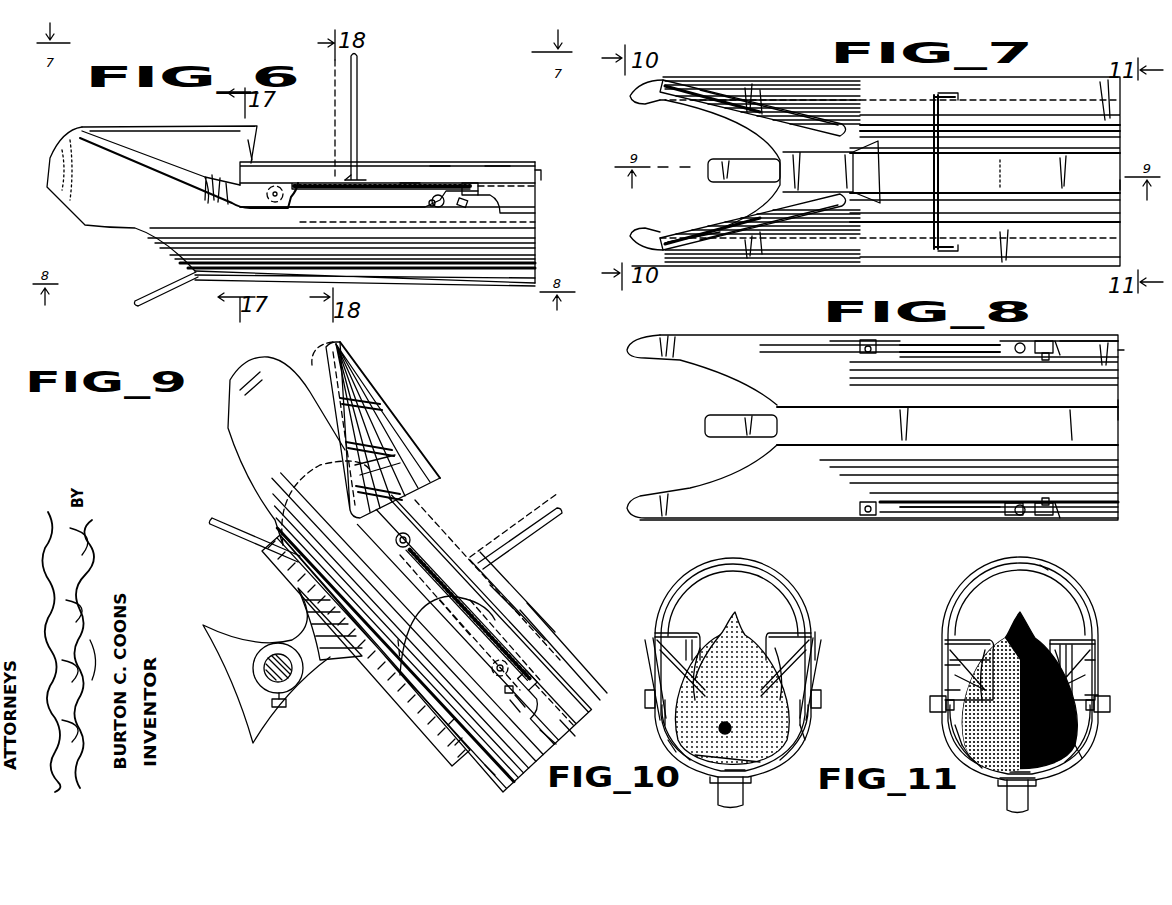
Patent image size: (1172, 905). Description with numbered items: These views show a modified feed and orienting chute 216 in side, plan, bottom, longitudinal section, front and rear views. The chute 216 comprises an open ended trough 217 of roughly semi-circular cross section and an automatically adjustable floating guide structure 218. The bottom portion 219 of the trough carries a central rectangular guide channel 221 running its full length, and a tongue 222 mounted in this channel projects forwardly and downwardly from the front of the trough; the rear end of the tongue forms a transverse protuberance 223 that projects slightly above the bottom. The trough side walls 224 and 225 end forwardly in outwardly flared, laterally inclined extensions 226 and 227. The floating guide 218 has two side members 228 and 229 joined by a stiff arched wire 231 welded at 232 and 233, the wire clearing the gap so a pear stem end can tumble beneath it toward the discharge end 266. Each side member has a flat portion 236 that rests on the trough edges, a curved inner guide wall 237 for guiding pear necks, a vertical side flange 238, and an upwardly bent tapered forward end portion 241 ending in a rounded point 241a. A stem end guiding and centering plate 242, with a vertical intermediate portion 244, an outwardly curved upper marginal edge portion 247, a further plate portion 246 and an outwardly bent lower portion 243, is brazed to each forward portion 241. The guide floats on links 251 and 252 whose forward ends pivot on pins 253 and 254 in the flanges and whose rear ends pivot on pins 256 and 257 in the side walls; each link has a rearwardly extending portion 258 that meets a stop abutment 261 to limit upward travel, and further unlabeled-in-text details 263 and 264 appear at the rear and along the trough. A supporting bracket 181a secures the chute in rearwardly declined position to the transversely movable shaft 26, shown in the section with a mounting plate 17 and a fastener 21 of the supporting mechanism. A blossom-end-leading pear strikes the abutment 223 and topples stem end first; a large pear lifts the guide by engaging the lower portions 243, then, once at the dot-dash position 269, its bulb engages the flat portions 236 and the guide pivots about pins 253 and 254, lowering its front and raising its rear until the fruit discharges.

In FIG. 9, the mounting plate 17 is at (262, 707).
In FIG. 9, the nut 21 is at (288, 699).
In FIG. 9, the transversely movable shaft 26 is at (300, 677).
In FIG. 9, the supporting bracket 181a is at (322, 622).
In FIG. 6, the chute 216 is at (262, 278).
In FIG. 7, the chute 216 is at (1100, 88).
In FIG. 8, the chute 216 is at (775, 345).
In FIG. 9, the chute 216 is at (440, 695).
In FIG. 10, the chute 216 is at (778, 768).
In FIG. 11, the chute 216 is at (1070, 776).
In FIG. 6, the trough 217 is at (387, 222).
In FIG. 7, the trough 217 is at (1112, 153).
In FIG. 8, the trough 217 is at (1108, 394).
In FIG. 9, the trough 217 is at (484, 645).
In FIG. 10, the trough 217 is at (800, 760).
In FIG. 11, the trough 217 is at (1080, 770).
In FIG. 6, the floating guide structure 218 is at (285, 158).
In FIG. 7, the floating guide structure 218 is at (1078, 262).
In FIG. 8, the floating guide structure 218 is at (845, 344).
In FIG. 9, the floating guide structure 218 is at (448, 469).
In FIG. 10, the floating guide structure 218 is at (648, 640).
In FIG. 11, the floating guide structure 218 is at (940, 658).
In FIG. 6, the bottom portion 219 is at (428, 268).
In FIG. 7, the bottom portion 219 is at (984, 184).
In FIG. 8, the bottom portion 219 is at (984, 389).
In FIG. 9, the bottom portion 219 is at (442, 718).
In FIG. 10, the bottom portion 219 is at (668, 745).
In FIG. 11, the bottom portion 219 is at (972, 760).
In FIG. 6, the guide channel 221 is at (500, 284).
In FIG. 7, the guide channel 221 is at (1039, 172).
In FIG. 8, the guide channel 221 is at (947, 426).
In FIG. 9, the guide channel 221 is at (478, 762).
In FIG. 10, the guide channel 221 is at (716, 787).
In FIG. 11, the guide channel 221 is at (1037, 790).
In FIG. 6, the tongue 222 is at (160, 291).
In FIG. 7, the tongue 222 is at (745, 165).
In FIG. 8, the tongue 222 is at (736, 420).
In FIG. 9, the tongue 222 is at (238, 530).
In FIG. 10, the tongue 222 is at (745, 795).
In FIG. 11, the tongue 222 is at (1012, 797).
In FIG. 7, the protuberance 223 is at (880, 162).
In FIG. 9, the protuberance 223 is at (356, 612).
In FIG. 10, the protuberance 223 is at (692, 760).
In FIG. 11, the protuberance 223 is at (1040, 782).
In FIG. 8, the side wall 224 is at (1108, 466).
In FIG. 9, the side wall 224 is at (447, 635).
In FIG. 10, the side wall 224 is at (664, 714).
In FIG. 11, the side wall 224 is at (1085, 755).
In FIG. 6, the side wall 225 is at (525, 226).
In FIG. 8, the side wall 225 is at (1112, 372).
In FIG. 10, the side wall 225 is at (800, 736).
In FIG. 11, the side wall 225 is at (960, 737).
In FIG. 6, the extension 226 is at (165, 199).
In FIG. 7, the extension 226 is at (700, 234).
In FIG. 8, the extension 226 is at (702, 370).
In FIG. 10, the extension 226 is at (812, 678).
In FIG. 7, the extension 227 is at (682, 100).
In FIG. 8, the extension 227 is at (872, 481).
In FIG. 9, the extension 227 is at (299, 443).
In FIG. 10, the extension 227 is at (652, 668).
In FIG. 7, the side member 228 is at (990, 111).
In FIG. 8, the side member 228 is at (960, 515).
In FIG. 9, the side member 228 is at (500, 592).
In FIG. 10, the side member 228 is at (665, 652).
In FIG. 11, the side member 228 is at (1100, 667).
In FIG. 6, the side member 229 is at (440, 175).
In FIG. 7, the side member 229 is at (990, 253).
In FIG. 8, the side member 229 is at (1080, 345).
In FIG. 10, the side member 229 is at (820, 644).
In FIG. 11, the side member 229 is at (945, 668).
In FIG. 6, the arched wire 231 is at (360, 108).
In FIG. 7, the arched wire 231 is at (940, 162).
In FIG. 9, the arched wire 231 is at (540, 530).
In FIG. 10, the arched wire 231 is at (792, 585).
In FIG. 11, the arched wire 231 is at (1082, 597).
In FIG. 7, the weld 232 is at (950, 97).
In FIG. 11, the weld 232 is at (1098, 700).
In FIG. 6, the weld 233 is at (368, 180).
In FIG. 7, the weld 233 is at (945, 252).
In FIG. 11, the weld 233 is at (945, 693).
In FIG. 6, the flat portion 236 is at (410, 182).
In FIG. 8, the flat portion 236 is at (996, 348).
In FIG. 9, the flat portion 236 is at (540, 628).
In FIG. 11, the flat portion 236 is at (952, 677).
In FIG. 6, the curved inner guide wall 237 is at (497, 175).
In FIG. 7, the curved inner guide wall 237 is at (1110, 136).
In FIG. 9, the curved inner guide wall 237 is at (512, 612).
In FIG. 11, the curved inner guide wall 237 is at (940, 652).
In FIG. 6, the side flange 238 is at (520, 200).
In FIG. 7, the side flange 238 is at (924, 76).
In FIG. 8, the side flange 238 is at (1058, 346).
In FIG. 9, the side flange 238 is at (440, 496).
In FIG. 10, the side flange 238 is at (650, 700).
In FIG. 11, the side flange 238 is at (940, 705).
In FIG. 6, the tapered forward end portion 241 is at (125, 176).
In FIG. 7, the tapered forward end portion 241 is at (790, 92).
In FIG. 11, the tapered forward end portion 241 is at (940, 645).
In FIG. 7, the rounded point 241a is at (648, 90).
In FIG. 6, the stem end guiding and centering plate 242 is at (212, 142).
In FIG. 7, the stem end guiding and centering plate 242 is at (752, 112).
In FIG. 9, the stem end guiding and centering plate 242 is at (400, 415).
In FIG. 10, the stem end guiding and centering plate 242 is at (682, 595).
In FIG. 11, the stem end guiding and centering plate 242 is at (945, 630).
In FIG. 9, the lower portion 243 is at (362, 479).
In FIG. 10, the lower portion 243 is at (806, 726).
In FIG. 11, the lower portion 243 is at (952, 726).
In FIG. 6, the vertical intermediate portion 244 is at (269, 158).
In FIG. 7, the vertical intermediate portion 244 is at (785, 108).
In FIG. 9, the vertical intermediate portion 244 is at (424, 456).
In FIG. 10, the vertical intermediate portion 244 is at (730, 648).
In FIG. 11, the vertical intermediate portion 244 is at (1040, 645).
In FIG. 7, the lid rib 246 is at (690, 240).
In FIG. 9, the lid rib 246 is at (385, 398).
In FIG. 10, the lid rib 246 is at (665, 622).
In FIG. 9, the upper marginal edge portion 247 is at (418, 432).
In FIG. 10, the upper marginal edge portion 247 is at (700, 650).
In FIG. 11, the upper marginal edge portion 247 is at (985, 648).
In FIG. 8, the link 251 is at (980, 515).
In FIG. 6, the link 252 is at (387, 195).
In FIG. 8, the link 252 is at (955, 346).
In FIG. 9, the link 252 is at (432, 563).
In FIG. 6, the pivot pin 253 is at (282, 182).
In FIG. 8, the pivot pin 253 is at (872, 362).
In FIG. 9, the pivot pin 254 is at (396, 540).
In FIG. 8, the pivot pin 256 is at (1022, 518).
In FIG. 6, the pivot pin 257 is at (438, 206).
In FIG. 8, the pivot pin 257 is at (1030, 344).
In FIG. 9, the pivot pin 257 is at (494, 668).
In FIG. 6, the rearwardly extending portion 258 is at (470, 182).
In FIG. 8, the rearwardly extending portion 258 is at (1040, 345).
In FIG. 9, the rearwardly extending portion 258 is at (522, 710).
In FIG. 6, the stop abutment 261 is at (470, 208).
In FIG. 8, the stop abutment 261 is at (1050, 360).
In FIG. 9, the stop abutment 261 is at (502, 690).
In FIG. 11, the stop abutment 261 is at (1048, 568).
In FIG. 8, the bottom rail 263 is at (1112, 503).
In FIG. 9, the bottom rail 263 is at (566, 730).
In FIG. 6, the end bracket 264 is at (540, 177).
In FIG. 8, the end bracket 264 is at (1118, 355).
In FIG. 6, the discharge end 266 is at (535, 249).
In FIG. 7, the discharge end 266 is at (1120, 185).
In FIG. 8, the discharge end 266 is at (1112, 420).
In FIG. 9, the discharge end 266 is at (548, 738).
In FIG. 11, the discharge end 266 is at (965, 748).
In FIG. 9, the oriented pear position 269 is at (397, 636).